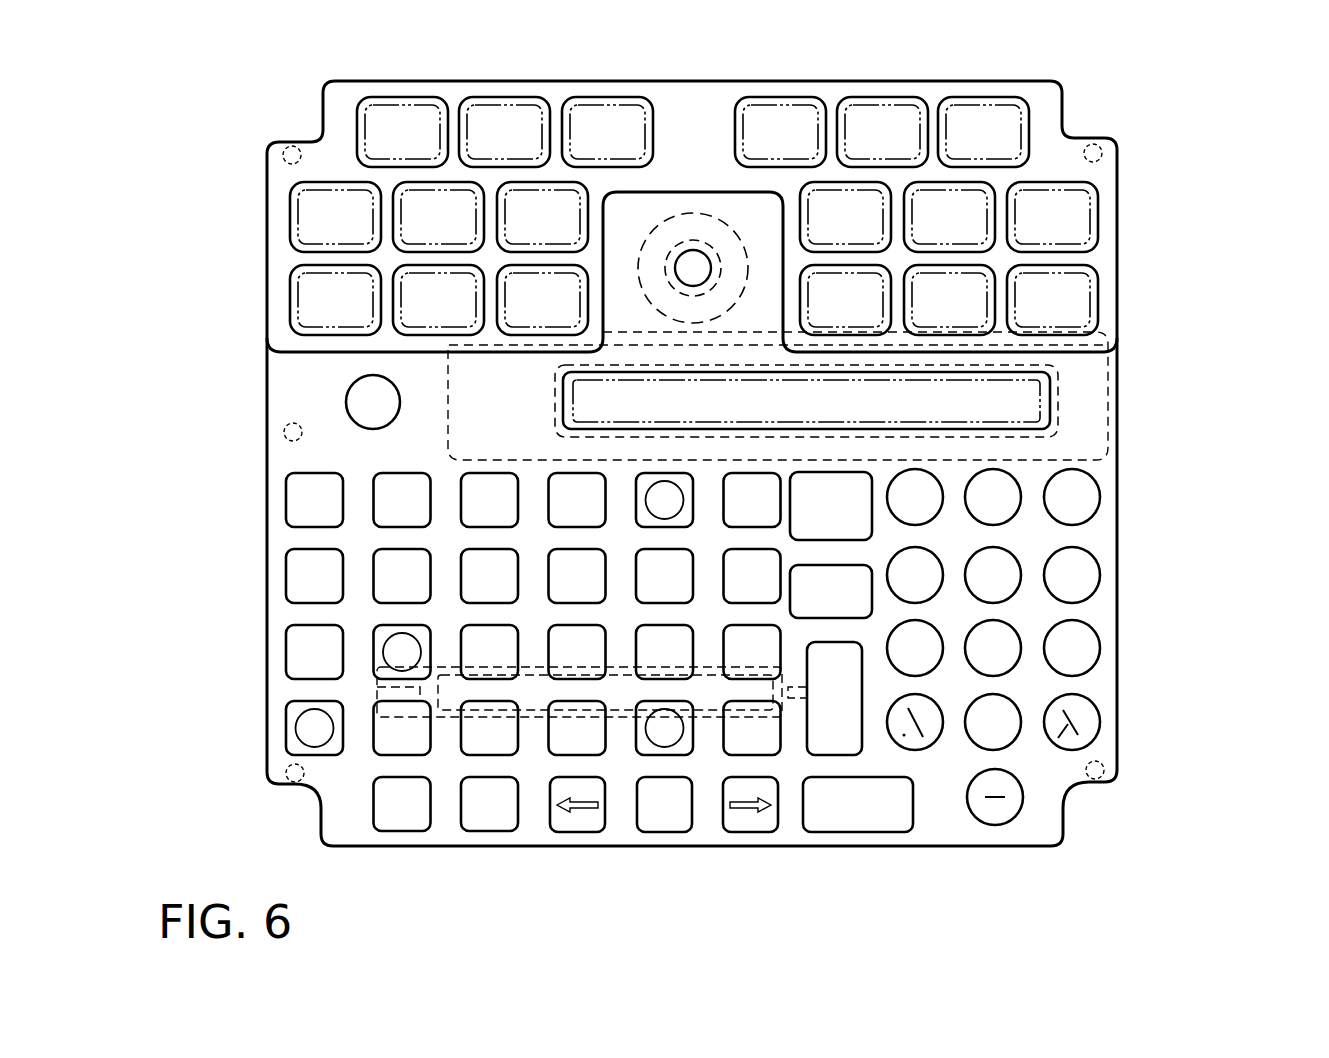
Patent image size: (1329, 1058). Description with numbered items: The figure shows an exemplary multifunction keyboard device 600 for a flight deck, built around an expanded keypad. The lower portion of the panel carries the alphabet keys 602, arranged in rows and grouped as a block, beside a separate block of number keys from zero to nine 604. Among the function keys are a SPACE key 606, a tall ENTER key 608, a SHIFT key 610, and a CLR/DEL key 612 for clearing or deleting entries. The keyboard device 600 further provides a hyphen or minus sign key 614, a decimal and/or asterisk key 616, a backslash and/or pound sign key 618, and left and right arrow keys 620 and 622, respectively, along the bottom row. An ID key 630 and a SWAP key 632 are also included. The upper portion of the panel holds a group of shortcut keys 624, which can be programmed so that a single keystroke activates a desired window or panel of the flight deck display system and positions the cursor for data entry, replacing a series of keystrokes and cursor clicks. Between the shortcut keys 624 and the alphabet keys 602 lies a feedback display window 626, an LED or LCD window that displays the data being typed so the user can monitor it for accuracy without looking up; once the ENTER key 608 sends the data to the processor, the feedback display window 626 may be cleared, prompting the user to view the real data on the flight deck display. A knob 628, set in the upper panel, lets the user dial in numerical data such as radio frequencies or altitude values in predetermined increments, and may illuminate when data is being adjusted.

The multifunction keyboard device 600 is at (1183, 112).
The alphabet keys 602 is at (248, 840).
The number keys 604 is at (1143, 692).
The SPACE key 606 is at (660, 822).
The ENTER key 608 is at (857, 742).
The SHIFT key 610 is at (866, 583).
The CLR/DEL key 612 is at (805, 478).
The hyphen or minus sign key 614 is at (1010, 805).
The decimal and/or asterisk key 616 is at (935, 737).
The backslash and/or pound sign key 618 is at (1090, 728).
The left arrow key 620 is at (577, 822).
The right arrow key 622 is at (748, 822).
The shortcut keys 624 is at (247, 360).
The feedback display window 626 is at (1033, 408).
The knob 628 is at (684, 258).
The ID key 630 is at (346, 400).
The SWAP key 632 is at (840, 825).